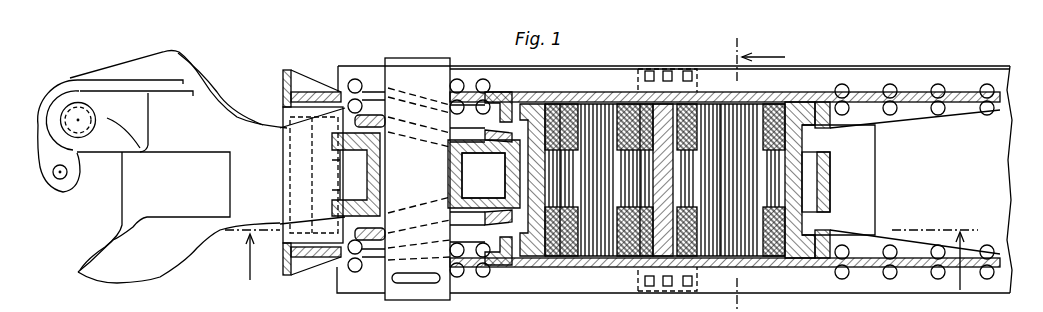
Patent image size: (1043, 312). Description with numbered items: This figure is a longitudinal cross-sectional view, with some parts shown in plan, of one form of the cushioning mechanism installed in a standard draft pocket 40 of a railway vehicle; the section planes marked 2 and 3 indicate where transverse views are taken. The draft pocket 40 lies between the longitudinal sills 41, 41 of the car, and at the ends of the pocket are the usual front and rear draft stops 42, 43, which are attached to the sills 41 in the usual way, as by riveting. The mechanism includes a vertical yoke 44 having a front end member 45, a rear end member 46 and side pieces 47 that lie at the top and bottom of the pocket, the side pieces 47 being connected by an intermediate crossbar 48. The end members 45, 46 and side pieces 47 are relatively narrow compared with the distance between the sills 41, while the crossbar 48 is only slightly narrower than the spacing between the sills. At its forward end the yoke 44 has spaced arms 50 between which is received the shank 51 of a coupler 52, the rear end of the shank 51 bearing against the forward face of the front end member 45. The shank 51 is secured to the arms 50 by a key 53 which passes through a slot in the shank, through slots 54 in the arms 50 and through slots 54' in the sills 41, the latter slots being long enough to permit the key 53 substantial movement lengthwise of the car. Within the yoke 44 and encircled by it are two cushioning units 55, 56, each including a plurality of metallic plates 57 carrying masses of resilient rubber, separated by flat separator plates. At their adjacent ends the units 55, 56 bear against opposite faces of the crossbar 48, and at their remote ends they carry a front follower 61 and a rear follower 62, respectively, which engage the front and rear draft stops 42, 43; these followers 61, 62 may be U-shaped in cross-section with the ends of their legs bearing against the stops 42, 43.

The section line 2- 2 is at (601, 267).
The section line 3- 3 is at (761, 174).
The draft pocket 40 is at (853, 140).
The longitudinal sills 41 is at (795, 77).
The front draft stop 42 is at (486, 96).
The rear draft stop 43 is at (828, 118).
The vertical yoke 44 is at (512, 169).
The front end member 45 is at (510, 188).
The rear end member 46 is at (830, 172).
The side pieces 47 is at (808, 193).
The crossbar 48 is at (667, 103).
The spaced arms 50 is at (352, 118).
The shank 51 is at (303, 140).
The coupler 52 is at (195, 108).
The key 53 is at (385, 280).
The slots 54 is at (478, 175).
The slots 54' is at (335, 159).
The cushioning unit 55 is at (599, 258).
The cushioning unit 56 is at (732, 258).
The metallic plates 57 is at (640, 208).
The front follower 61 is at (535, 103).
The rear follower 62 is at (795, 250).